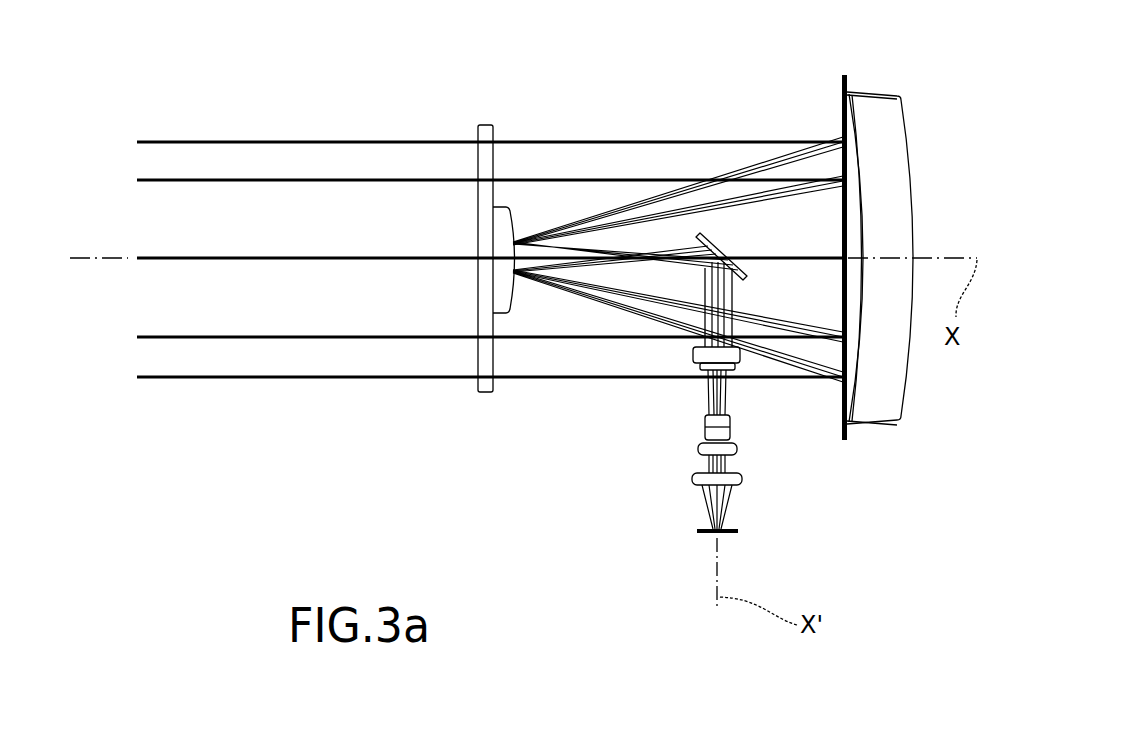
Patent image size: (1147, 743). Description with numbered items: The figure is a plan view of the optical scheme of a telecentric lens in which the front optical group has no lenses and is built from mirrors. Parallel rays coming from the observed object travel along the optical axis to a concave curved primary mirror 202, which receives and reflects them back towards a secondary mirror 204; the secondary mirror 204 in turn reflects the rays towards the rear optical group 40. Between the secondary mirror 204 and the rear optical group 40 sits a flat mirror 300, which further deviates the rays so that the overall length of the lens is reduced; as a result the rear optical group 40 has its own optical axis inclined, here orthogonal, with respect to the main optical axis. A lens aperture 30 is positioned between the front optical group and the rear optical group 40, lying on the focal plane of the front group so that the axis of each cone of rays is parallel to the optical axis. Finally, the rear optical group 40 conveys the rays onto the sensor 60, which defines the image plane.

The primary mirror 202 is at (906, 129).
The secondary mirror 204 is at (516, 220).
The flat mirror 300 is at (720, 232).
The lens aperture 30 is at (705, 395).
The rear optical group 40 is at (670, 465).
The sensor 60 is at (725, 538).